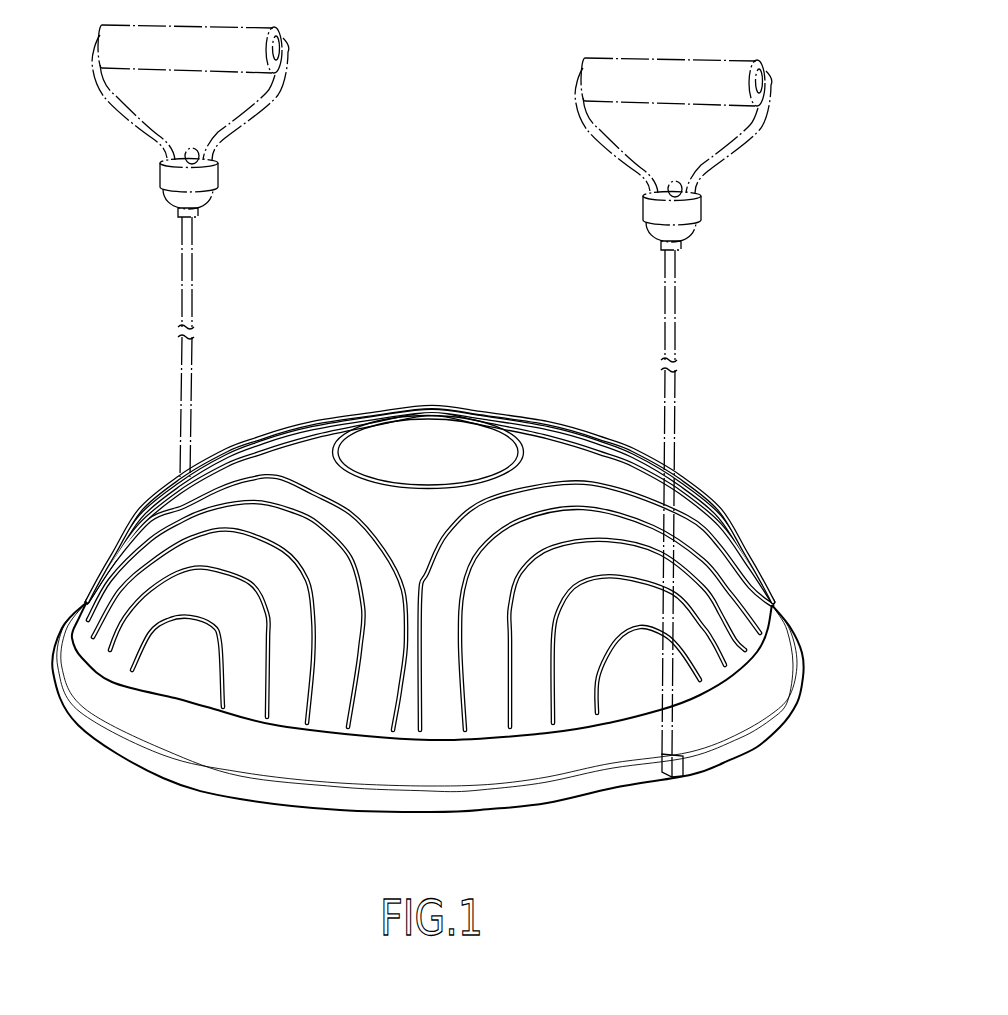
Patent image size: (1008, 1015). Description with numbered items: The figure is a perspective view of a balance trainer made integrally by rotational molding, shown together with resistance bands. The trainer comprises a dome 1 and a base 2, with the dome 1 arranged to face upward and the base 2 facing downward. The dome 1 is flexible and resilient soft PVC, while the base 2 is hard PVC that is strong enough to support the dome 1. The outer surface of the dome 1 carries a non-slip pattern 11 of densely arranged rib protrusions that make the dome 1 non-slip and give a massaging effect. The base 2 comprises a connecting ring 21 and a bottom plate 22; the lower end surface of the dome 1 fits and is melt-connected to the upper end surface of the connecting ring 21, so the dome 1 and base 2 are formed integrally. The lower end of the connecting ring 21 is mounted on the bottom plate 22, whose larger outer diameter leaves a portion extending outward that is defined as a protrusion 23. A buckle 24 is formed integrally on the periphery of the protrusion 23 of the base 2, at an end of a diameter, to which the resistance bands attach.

The dome 1 is at (408, 568).
The non-slip pattern 11 is at (128, 587).
The base 2 is at (468, 737).
The connecting ring 21 is at (740, 697).
The bottom plate 22 is at (727, 753).
The protrusion 23 is at (792, 660).
The buckle 24 is at (673, 777).